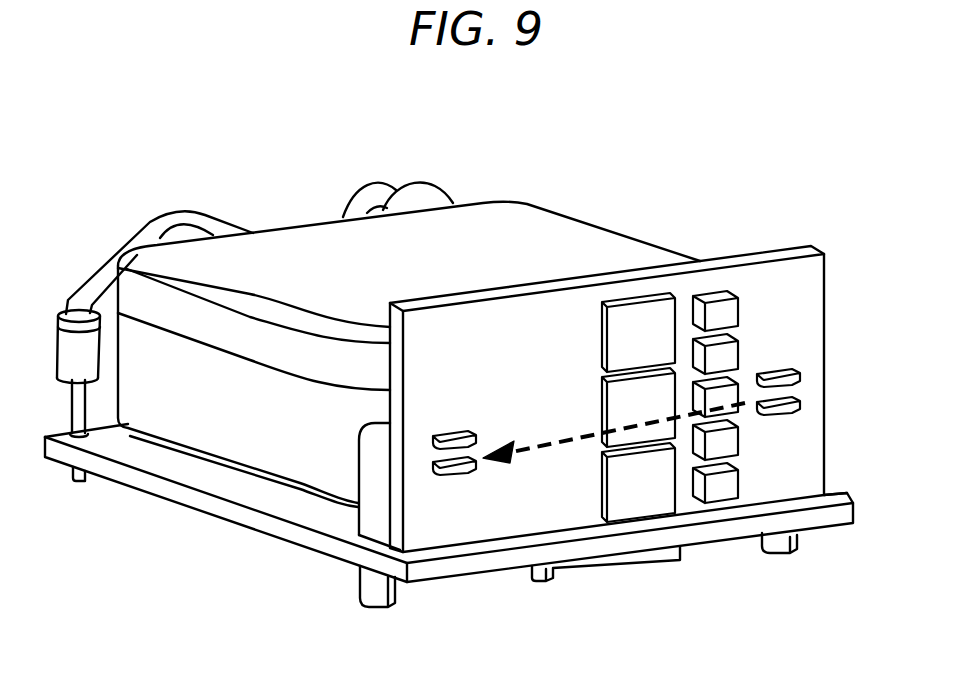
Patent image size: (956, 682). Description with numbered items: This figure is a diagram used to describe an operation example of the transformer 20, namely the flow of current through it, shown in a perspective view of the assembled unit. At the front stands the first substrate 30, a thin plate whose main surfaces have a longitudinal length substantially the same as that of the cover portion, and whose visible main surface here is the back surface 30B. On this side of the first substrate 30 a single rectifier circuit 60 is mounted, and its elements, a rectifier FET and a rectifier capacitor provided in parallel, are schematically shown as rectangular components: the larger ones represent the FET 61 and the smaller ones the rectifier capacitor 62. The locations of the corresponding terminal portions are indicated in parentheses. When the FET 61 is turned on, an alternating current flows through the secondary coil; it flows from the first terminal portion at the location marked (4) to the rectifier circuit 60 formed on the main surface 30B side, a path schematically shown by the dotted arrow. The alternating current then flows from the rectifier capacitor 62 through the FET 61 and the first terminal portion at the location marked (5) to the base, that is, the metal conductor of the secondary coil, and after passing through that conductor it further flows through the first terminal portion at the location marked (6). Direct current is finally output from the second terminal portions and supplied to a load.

The transformer 20 is at (521, 178).
The first substrate 30 is at (765, 253).
The back surface 30B is at (810, 282).
The FET 61 is at (641, 332).
The rectifier capacitor 62 is at (722, 312).
The location of first terminal portion 4 is at (795, 401).
The location of first terminal portion 5 is at (462, 477).
The location of first terminal portion 6 is at (777, 545).
The rectifier circuit 60 is at (591, 455).